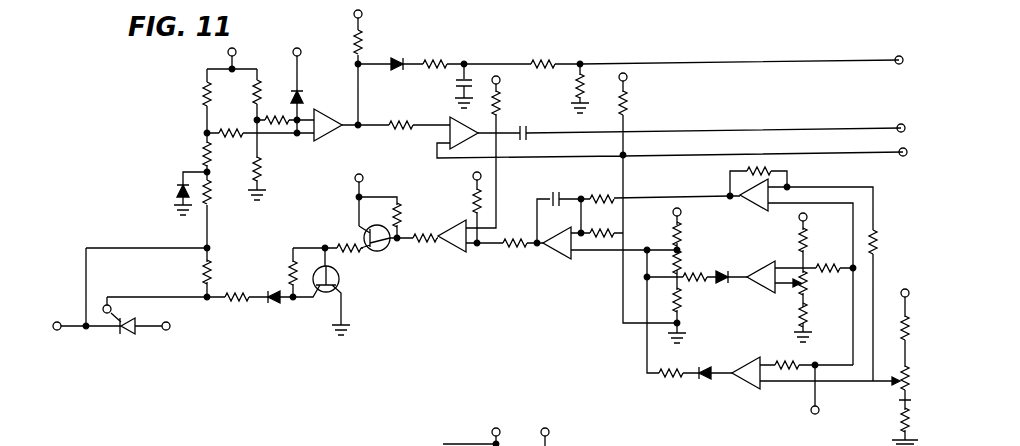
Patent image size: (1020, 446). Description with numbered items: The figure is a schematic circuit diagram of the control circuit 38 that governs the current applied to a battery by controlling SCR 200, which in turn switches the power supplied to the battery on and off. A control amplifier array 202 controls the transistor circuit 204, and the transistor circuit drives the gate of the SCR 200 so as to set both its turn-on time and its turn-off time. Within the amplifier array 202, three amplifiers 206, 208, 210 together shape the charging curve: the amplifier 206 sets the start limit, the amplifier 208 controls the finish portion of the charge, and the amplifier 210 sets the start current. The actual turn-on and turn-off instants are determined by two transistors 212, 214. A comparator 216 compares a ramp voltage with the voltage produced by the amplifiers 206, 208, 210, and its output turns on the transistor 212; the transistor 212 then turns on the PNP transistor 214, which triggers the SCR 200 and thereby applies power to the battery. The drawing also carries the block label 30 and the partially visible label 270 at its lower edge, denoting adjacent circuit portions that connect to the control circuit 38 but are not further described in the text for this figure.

The control circuit 38 is at (585, 30).
The circuit block 30 is at (470, 425).
The circuit element 270 is at (587, 441).
The SCR 200 is at (129, 333).
The control amplifier array 202 is at (699, 388).
The transistor circuit 204 is at (358, 268).
The amplifier 206 is at (753, 332).
The amplifier 208 is at (768, 270).
The amplifier 210 is at (755, 198).
The transistor 212 is at (364, 232).
The PNP transistor 214 is at (322, 292).
The comparator 216 is at (460, 250).